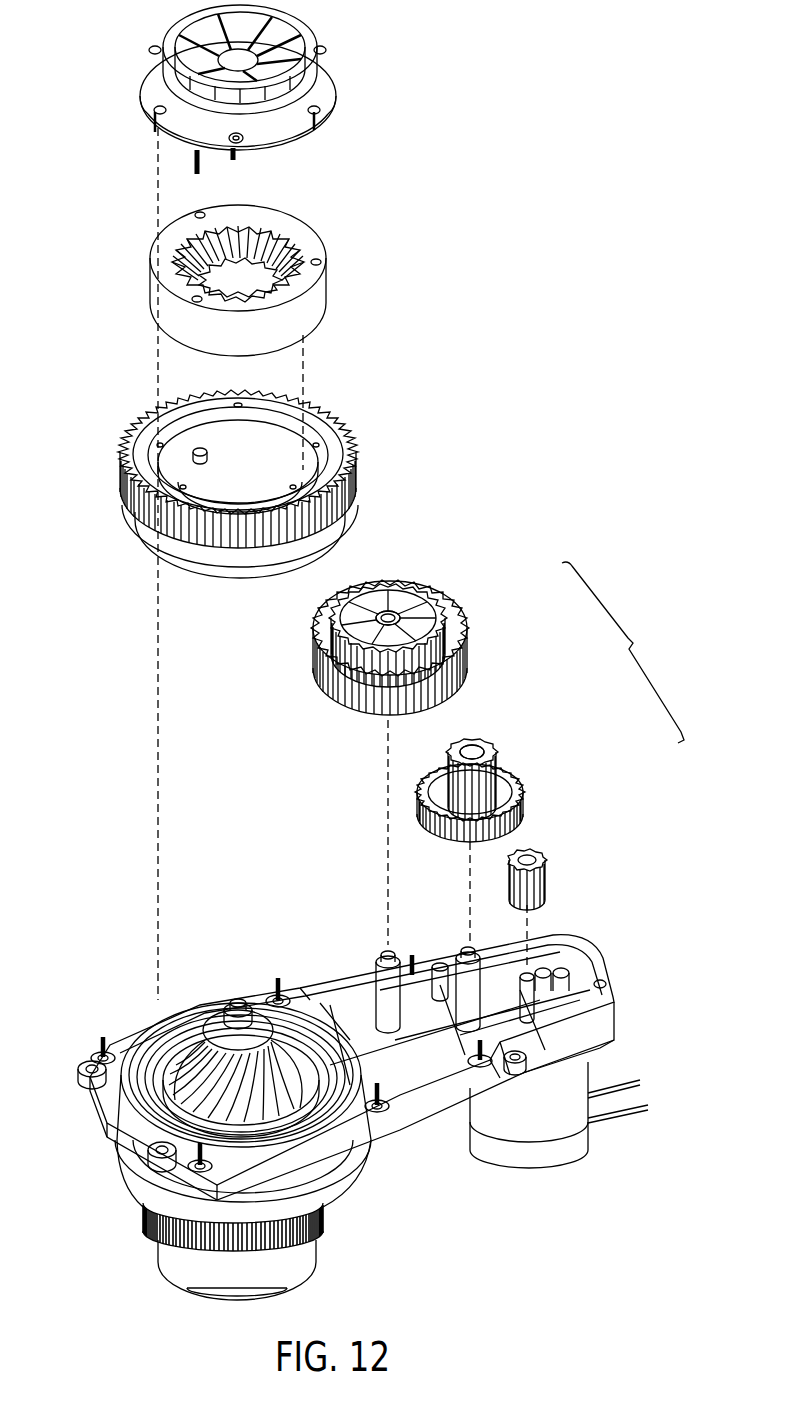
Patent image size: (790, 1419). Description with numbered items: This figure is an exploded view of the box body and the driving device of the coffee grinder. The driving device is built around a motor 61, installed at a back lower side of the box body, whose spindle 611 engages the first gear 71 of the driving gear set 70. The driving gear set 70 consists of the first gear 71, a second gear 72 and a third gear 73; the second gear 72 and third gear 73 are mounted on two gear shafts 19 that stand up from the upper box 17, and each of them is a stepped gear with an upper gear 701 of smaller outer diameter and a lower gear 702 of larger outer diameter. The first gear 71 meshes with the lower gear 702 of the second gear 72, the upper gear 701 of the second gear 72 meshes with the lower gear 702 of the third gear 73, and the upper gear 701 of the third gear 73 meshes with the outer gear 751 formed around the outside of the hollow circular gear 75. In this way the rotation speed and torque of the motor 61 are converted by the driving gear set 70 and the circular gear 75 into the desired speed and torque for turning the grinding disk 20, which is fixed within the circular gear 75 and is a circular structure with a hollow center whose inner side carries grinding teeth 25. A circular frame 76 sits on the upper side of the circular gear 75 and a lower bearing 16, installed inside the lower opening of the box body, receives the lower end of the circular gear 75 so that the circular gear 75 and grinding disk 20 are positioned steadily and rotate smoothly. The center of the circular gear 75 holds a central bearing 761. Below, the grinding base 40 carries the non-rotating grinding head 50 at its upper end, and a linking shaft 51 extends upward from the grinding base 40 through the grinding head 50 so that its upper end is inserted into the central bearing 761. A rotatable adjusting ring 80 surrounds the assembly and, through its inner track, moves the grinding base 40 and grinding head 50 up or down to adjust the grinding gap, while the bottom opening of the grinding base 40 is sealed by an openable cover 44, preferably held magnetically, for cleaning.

The central bearing 761 is at (248, 58).
The circular frame 76 is at (277, 88).
The grinding teeth 25 is at (262, 250).
The grinding disk 20 is at (277, 262).
The outer gear 751 is at (358, 455).
The circular gear 75 is at (261, 490).
The driving gear set 70 is at (497, 709).
The third gear 73 is at (455, 598).
The second gear 72 is at (510, 772).
The first gear 71 is at (548, 862).
The upper gear 701 is at (413, 583).
The lower gear 702 is at (462, 660).
The gear shaft 19 is at (380, 975).
The upper box 17 is at (394, 1067).
The spindle 611 is at (600, 995).
The motor 61 is at (598, 1145).
The lower bearing 16 is at (150, 1058).
The grinding head 50 is at (168, 1112).
The linking shaft 51 is at (243, 1003).
The adjusting ring 80 is at (237, 1078).
The grinding base 40 is at (330, 1243).
The cover 44 is at (315, 1265).